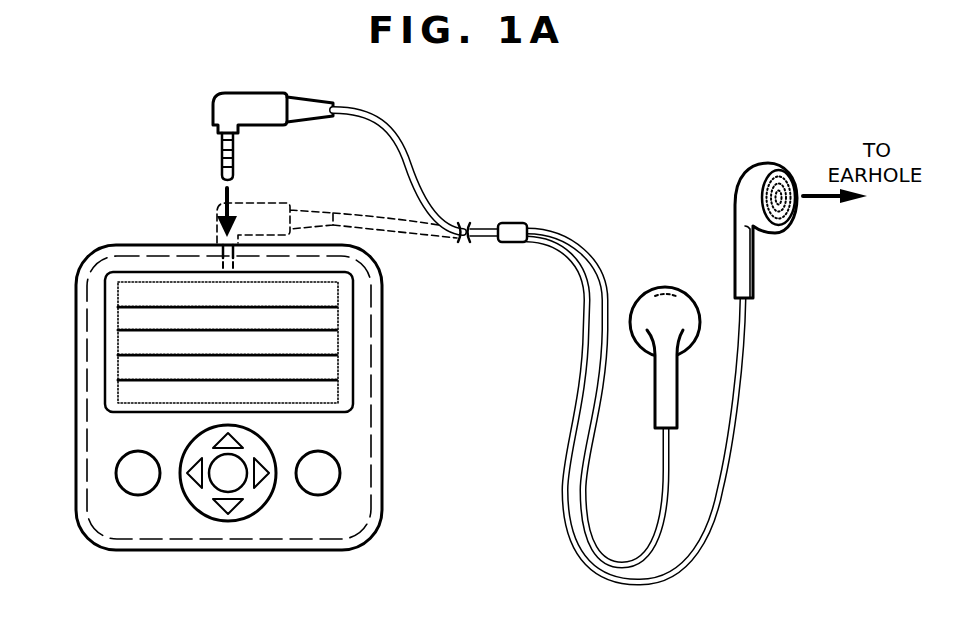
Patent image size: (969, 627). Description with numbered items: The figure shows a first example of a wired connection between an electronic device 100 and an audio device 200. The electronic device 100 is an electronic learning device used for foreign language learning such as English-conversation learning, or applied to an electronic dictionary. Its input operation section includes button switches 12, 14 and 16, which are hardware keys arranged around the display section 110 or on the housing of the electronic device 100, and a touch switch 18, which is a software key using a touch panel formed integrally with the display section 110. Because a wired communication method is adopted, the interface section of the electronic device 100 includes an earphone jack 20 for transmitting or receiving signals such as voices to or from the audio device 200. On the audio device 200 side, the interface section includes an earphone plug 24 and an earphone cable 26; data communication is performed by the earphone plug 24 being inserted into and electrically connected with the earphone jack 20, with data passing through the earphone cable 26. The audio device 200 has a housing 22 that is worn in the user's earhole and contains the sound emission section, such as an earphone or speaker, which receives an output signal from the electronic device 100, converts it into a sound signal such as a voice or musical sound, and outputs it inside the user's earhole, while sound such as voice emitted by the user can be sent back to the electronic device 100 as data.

The electronic device 100 is at (76, 246).
The display section 110 is at (368, 373).
The touch switch 18 is at (70, 275).
The button switch 12 is at (226, 522).
The button switch 14 is at (316, 496).
The button switch 16 is at (137, 496).
The earphone jack 20 is at (220, 252).
The earphone plug 24 is at (217, 150).
The earphone cable 26 is at (398, 132).
The audio device 200 is at (712, 162).
The housing 22 is at (738, 205).